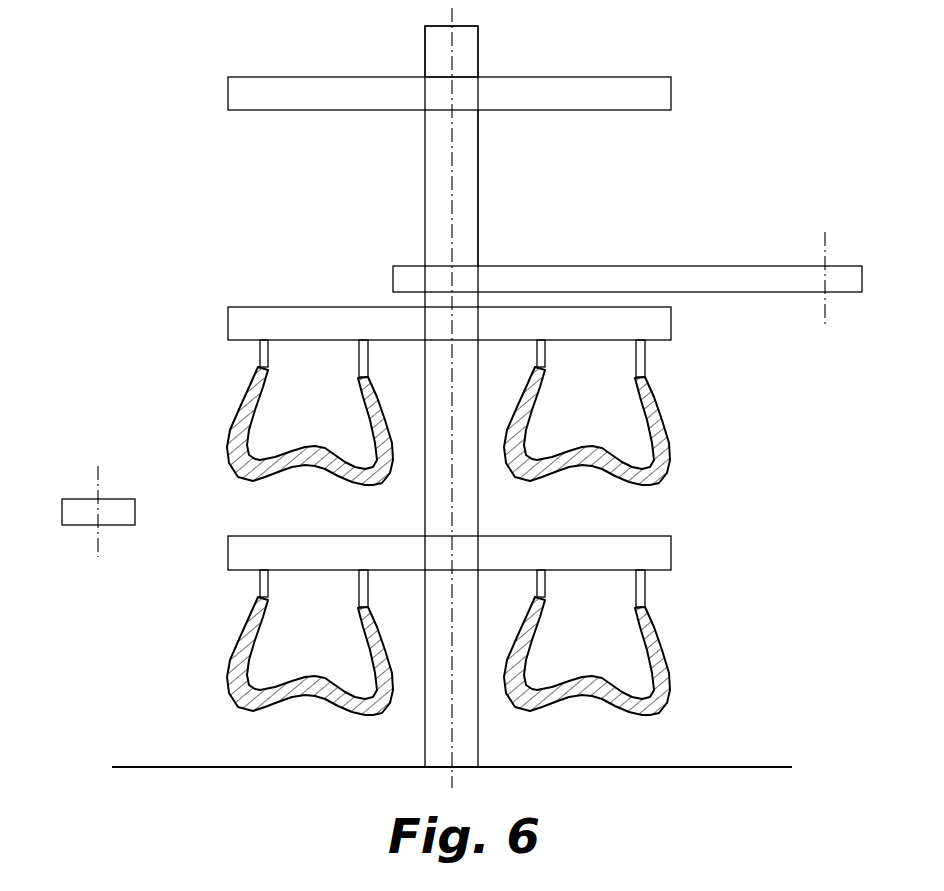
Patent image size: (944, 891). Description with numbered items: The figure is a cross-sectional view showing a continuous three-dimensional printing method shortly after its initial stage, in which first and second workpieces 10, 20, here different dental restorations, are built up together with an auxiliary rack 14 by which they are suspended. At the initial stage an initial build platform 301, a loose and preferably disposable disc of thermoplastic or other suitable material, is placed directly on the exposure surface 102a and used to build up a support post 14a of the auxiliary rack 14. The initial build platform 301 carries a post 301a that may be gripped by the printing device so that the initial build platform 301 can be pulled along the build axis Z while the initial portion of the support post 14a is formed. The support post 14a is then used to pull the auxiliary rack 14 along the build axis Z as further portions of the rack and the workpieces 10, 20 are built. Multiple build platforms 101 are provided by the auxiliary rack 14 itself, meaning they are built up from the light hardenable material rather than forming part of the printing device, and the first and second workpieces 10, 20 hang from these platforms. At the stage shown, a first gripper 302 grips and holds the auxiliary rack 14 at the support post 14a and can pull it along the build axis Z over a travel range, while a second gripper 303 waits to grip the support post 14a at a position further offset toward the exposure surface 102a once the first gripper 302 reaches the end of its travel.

The auxiliary rack 14 is at (404, 193).
The support post 14a is at (469, 161).
The build axis Z is at (453, 232).
The initial build platform 301 is at (663, 97).
The post 301a is at (432, 57).
The first gripper 302 is at (728, 271).
The second gripper 303 is at (73, 506).
The build platforms 101 is at (663, 323).
The first workpiece 10 is at (236, 404).
The second workpiece 20 is at (236, 639).
The exposure surface 102a is at (735, 766).